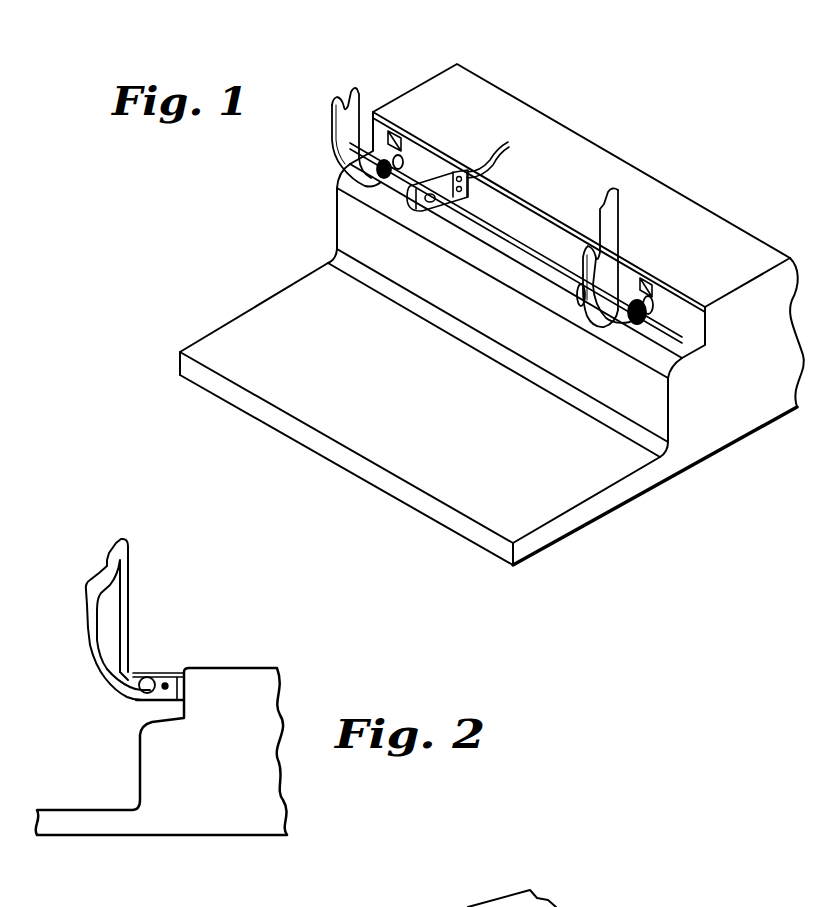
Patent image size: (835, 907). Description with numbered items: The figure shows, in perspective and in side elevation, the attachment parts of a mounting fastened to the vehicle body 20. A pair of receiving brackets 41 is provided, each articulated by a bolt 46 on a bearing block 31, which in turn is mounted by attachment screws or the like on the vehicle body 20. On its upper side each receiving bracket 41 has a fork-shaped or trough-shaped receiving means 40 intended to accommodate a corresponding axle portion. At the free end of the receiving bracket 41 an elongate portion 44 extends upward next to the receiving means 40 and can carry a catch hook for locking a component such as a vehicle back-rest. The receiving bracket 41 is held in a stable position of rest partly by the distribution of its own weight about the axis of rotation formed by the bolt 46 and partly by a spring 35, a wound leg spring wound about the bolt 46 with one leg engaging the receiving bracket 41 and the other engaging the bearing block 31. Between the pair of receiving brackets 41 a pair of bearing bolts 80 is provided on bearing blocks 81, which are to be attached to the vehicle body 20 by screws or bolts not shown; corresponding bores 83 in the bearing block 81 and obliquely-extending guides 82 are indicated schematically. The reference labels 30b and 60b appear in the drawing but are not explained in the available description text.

In FIG. 1, the vehicle body 20 is at (745, 392).
In FIG. 2, the vehicle body 20 is at (223, 777).
In FIG. 1, the retainer assembly 30b is at (483, 167).
In FIG. 1, the bearing block 31 is at (401, 158).
In FIG. 2, the bearing block 31 is at (178, 675).
In FIG. 2, the spring 35 is at (126, 692).
In FIG. 1, the receiving means 40 is at (471, 184).
In FIG. 2, the receiving means 40 is at (126, 601).
In FIG. 1, the receiving bracket 41 is at (352, 150).
In FIG. 2, the receiving bracket 41 is at (118, 618).
In FIG. 1, the elongate portion 44 is at (610, 227).
In FIG. 2, the elongate portion 44 is at (121, 562).
In FIG. 1, the bolt 46 is at (375, 181).
In FIG. 2, the bolt 46 is at (148, 674).
In FIG. 1, the channel 60b is at (432, 224).
In FIG. 1, the bearing bolt 80 is at (486, 227).
In FIG. 1, the bearing block 81 is at (450, 173).
In FIG. 1, the obliquely-extending guide 82 is at (417, 207).
In FIG. 1, the bore 83 is at (503, 143).